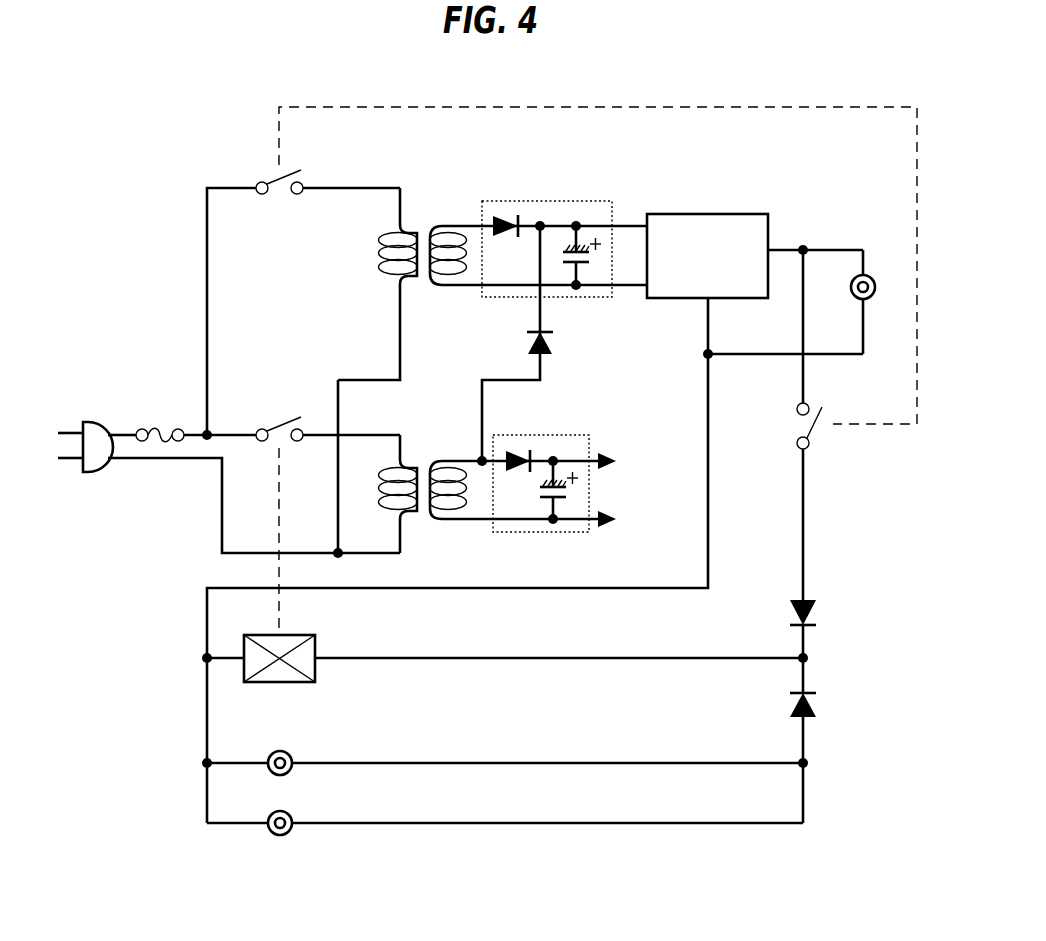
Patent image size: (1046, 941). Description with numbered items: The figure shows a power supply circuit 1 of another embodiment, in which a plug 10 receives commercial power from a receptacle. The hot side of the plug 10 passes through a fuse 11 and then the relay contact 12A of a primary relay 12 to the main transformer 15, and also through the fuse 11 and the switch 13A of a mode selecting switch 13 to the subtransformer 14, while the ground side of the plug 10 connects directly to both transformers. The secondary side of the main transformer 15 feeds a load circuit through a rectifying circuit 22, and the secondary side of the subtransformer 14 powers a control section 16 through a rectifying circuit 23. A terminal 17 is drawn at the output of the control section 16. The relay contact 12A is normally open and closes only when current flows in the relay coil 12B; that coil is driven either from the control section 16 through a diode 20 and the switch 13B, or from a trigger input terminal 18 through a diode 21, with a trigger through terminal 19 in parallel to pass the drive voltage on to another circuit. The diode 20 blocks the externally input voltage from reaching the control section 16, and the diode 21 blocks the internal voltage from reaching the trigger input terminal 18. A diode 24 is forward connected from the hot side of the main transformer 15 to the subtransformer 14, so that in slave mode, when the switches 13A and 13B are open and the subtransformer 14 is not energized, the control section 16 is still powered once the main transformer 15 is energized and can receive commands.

The power supply device 1 is at (122, 276).
The plug 10 is at (97, 422).
The fuse 11 is at (176, 429).
The primary relay 12 is at (190, 572).
The relay contact 12A is at (262, 429).
The relay coil 12B is at (318, 680).
The mode selecting switch 13 is at (262, 129).
The switch 13A is at (280, 193).
The switch 13B is at (791, 436).
The subtransformer 14 is at (420, 226).
The main transformer 15 is at (430, 458).
The control section 16 is at (733, 214).
The terminal 17 is at (876, 277).
The trigger input terminal 18 is at (271, 776).
The trigger through terminal 19 is at (274, 837).
The diode 20 is at (815, 600).
The diode 21 is at (815, 717).
The rectifying circuit 22 is at (590, 436).
The rectifying circuit 23 is at (612, 201).
The diode 24 is at (547, 351).